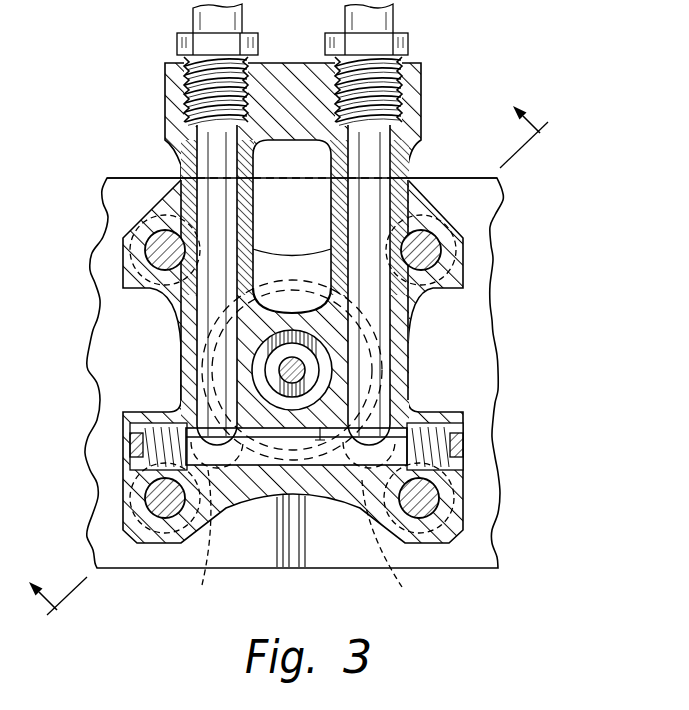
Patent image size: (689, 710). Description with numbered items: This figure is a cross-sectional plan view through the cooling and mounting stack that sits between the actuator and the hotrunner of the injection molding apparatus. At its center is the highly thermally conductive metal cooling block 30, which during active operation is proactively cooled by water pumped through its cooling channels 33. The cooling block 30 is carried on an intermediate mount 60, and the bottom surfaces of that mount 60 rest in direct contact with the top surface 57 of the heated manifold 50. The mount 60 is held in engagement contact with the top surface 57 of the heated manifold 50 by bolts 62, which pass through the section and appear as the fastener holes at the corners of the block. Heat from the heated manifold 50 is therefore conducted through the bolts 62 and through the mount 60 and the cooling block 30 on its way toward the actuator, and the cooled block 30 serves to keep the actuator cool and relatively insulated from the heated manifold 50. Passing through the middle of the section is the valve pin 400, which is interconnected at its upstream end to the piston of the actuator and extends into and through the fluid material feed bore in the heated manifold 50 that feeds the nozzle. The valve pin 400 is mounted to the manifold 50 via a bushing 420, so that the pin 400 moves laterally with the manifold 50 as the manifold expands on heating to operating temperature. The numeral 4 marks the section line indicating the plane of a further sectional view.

The cooling block 30 is at (167, 357).
The cooling channels 33 is at (383, 332).
The heated manifold 50 is at (112, 166).
The top surface of the heated manifold 57 is at (465, 392).
The mount 60 is at (311, 244).
The bolts 62 is at (150, 307).
The valve pin 400 is at (305, 371).
The bushing 420 is at (320, 488).
The section line 4- 4 is at (274, 348).